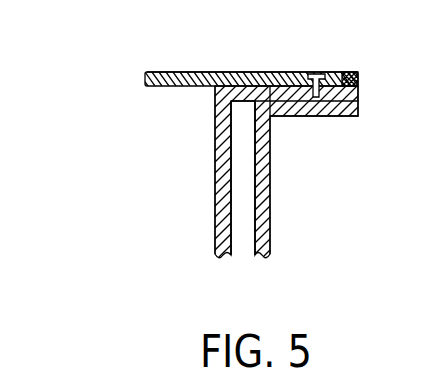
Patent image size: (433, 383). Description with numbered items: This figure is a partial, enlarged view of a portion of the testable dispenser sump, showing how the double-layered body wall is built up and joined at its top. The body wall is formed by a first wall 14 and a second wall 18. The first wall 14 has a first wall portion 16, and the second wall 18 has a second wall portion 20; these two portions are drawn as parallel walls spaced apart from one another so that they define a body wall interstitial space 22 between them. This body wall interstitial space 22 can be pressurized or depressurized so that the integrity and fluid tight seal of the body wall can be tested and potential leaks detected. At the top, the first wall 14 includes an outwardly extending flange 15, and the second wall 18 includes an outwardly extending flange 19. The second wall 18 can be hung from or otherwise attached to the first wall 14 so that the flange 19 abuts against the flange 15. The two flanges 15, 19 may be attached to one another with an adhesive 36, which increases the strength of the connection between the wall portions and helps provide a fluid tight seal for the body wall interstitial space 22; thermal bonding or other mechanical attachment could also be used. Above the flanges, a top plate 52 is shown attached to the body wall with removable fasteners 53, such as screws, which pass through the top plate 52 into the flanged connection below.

The first wall 14 is at (238, 185).
The outwardly extending flange 15 is at (338, 117).
The first wall portion 16 is at (272, 182).
The second wall 18 is at (153, 200).
The outwardly extending flange 19 is at (242, 72).
The second wall portion 20 is at (215, 228).
The body wall interstitial space 22 is at (252, 200).
The adhesive 36 is at (352, 72).
The top plate 52 is at (150, 72).
The removable fasteners 53 is at (313, 72).